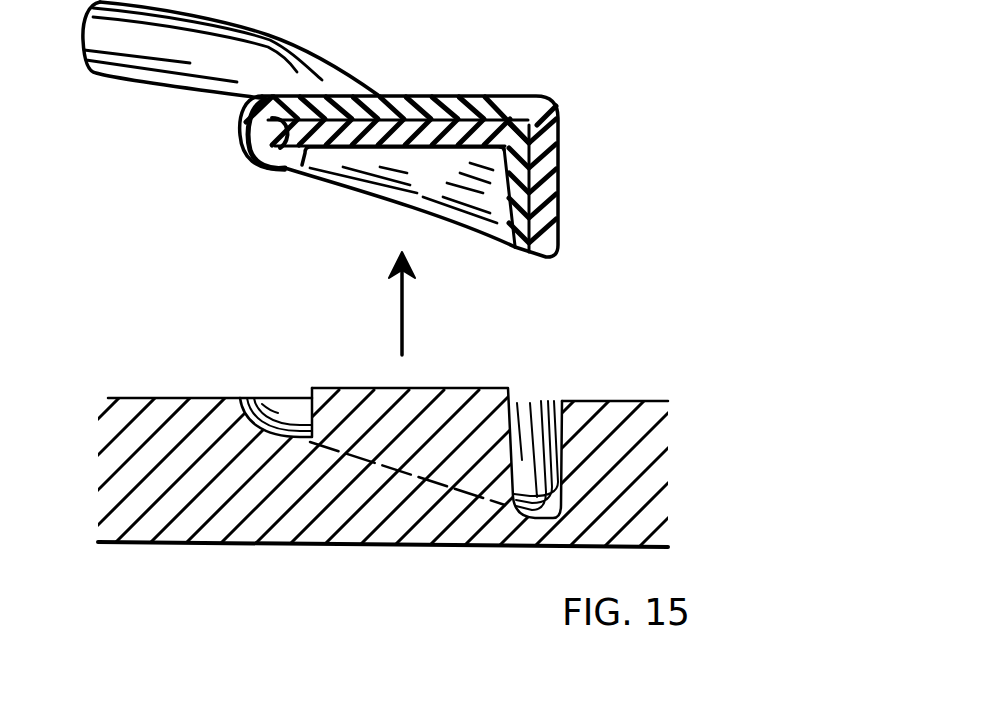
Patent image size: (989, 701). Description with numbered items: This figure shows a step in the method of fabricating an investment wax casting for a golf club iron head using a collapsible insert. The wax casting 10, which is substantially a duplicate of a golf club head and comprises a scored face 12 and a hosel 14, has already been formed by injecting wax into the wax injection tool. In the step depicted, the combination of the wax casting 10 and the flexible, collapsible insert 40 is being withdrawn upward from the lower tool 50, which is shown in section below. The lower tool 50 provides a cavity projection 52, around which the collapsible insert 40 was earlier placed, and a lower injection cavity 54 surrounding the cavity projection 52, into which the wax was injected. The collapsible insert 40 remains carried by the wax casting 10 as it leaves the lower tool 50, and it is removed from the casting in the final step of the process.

The wax casting 10 is at (420, 53).
The scored face 12 is at (507, 97).
The hosel 14 is at (130, 43).
The collapsible insert 40 is at (506, 200).
The lower tool 50 is at (143, 433).
The cavity projection 52 is at (360, 386).
The lower injection cavity 54 is at (288, 412).